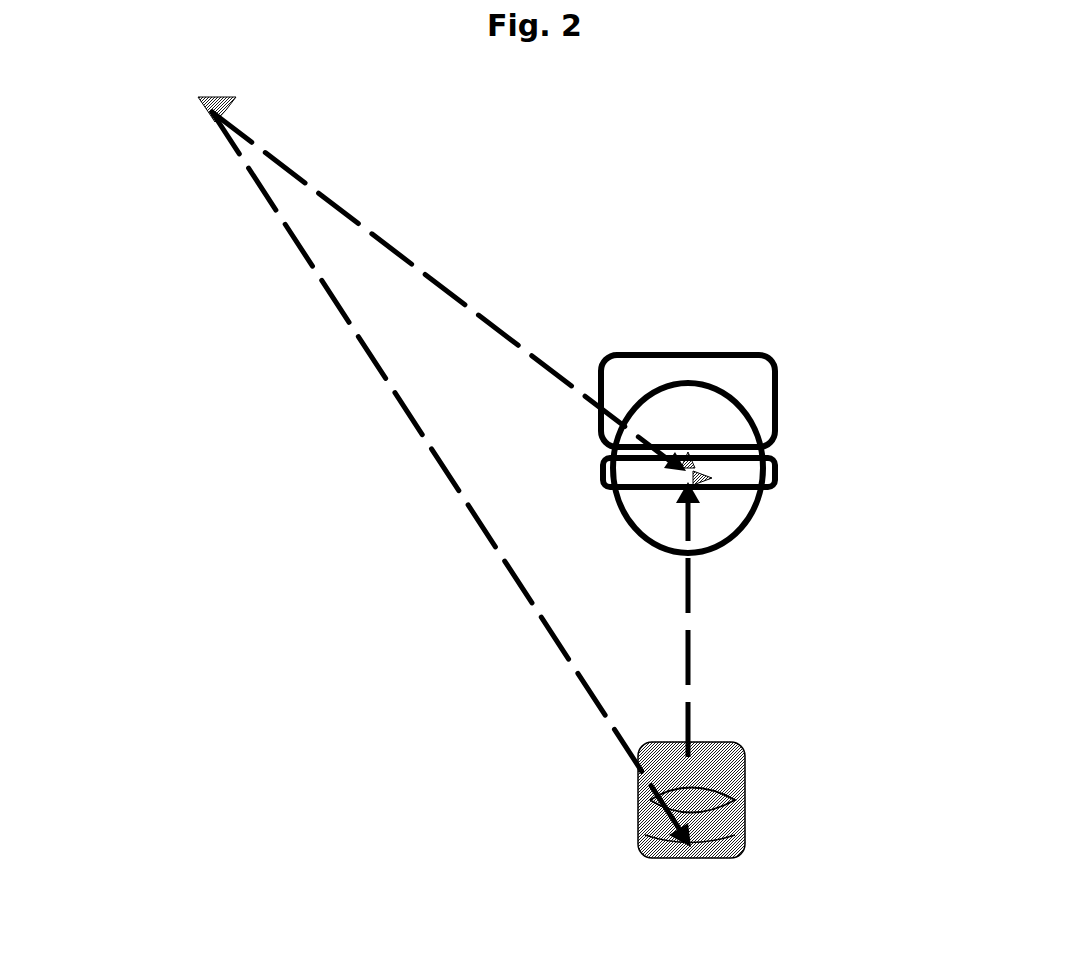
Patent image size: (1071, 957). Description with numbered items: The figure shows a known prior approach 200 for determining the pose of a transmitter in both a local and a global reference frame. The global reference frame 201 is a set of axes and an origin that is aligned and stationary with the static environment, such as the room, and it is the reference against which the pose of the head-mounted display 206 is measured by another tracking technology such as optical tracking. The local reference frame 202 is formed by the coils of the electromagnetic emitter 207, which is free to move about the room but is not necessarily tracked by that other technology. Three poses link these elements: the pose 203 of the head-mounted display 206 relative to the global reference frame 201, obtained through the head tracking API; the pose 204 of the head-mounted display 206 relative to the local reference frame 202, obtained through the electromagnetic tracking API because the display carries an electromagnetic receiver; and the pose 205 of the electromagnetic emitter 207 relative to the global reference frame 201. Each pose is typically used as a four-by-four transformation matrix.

The tracking system environment 200 is at (613, 148).
The global reference frame 201 is at (211, 118).
The local reference frame 202 is at (650, 830).
The pose of HMD relative to GRF 203 is at (534, 341).
The pose of HMD relative to LRF 204 is at (708, 657).
The pose of electromagnetic emitter relative to GRF 205 is at (546, 636).
The head-mounted display 206 is at (779, 350).
The electromagnetic emitter 207 is at (762, 775).